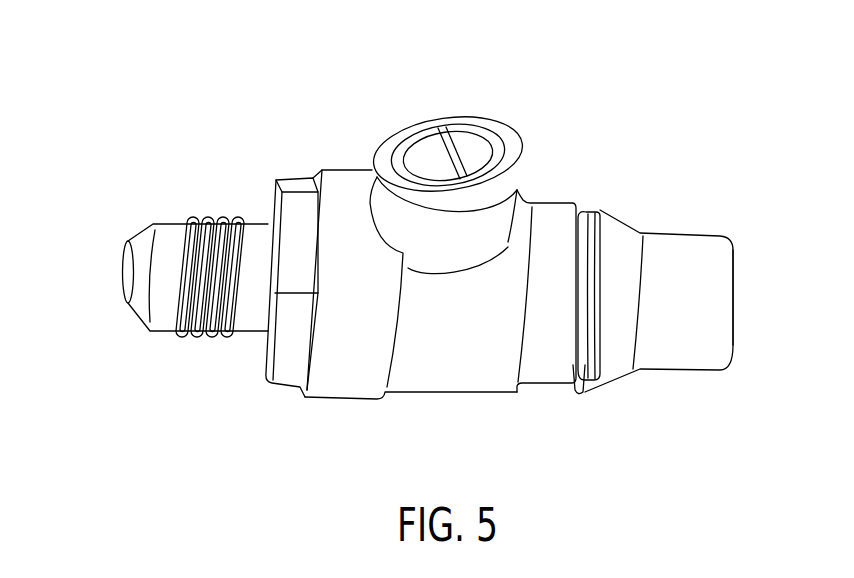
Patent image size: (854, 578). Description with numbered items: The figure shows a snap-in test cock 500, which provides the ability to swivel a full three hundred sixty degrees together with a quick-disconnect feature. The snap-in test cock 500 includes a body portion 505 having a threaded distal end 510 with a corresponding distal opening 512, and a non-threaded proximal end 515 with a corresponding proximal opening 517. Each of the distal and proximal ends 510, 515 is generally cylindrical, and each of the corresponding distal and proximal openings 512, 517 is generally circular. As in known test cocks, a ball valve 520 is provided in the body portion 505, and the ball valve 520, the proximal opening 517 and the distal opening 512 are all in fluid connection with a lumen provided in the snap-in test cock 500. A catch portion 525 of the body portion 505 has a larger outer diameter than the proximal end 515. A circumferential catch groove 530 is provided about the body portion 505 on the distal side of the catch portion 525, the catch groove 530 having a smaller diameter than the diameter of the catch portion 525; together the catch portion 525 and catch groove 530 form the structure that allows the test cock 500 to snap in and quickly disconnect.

The snap-in test cock 500 is at (660, 108).
The body portion 505 is at (433, 377).
The threaded distal end 510 is at (207, 215).
The distal opening 512 is at (100, 272).
The non-threaded proximal end 515 is at (678, 238).
The proximal opening 517 is at (740, 298).
The ball valve 520 is at (441, 140).
The catch portion 525 is at (614, 217).
The catch groove 530 is at (578, 388).